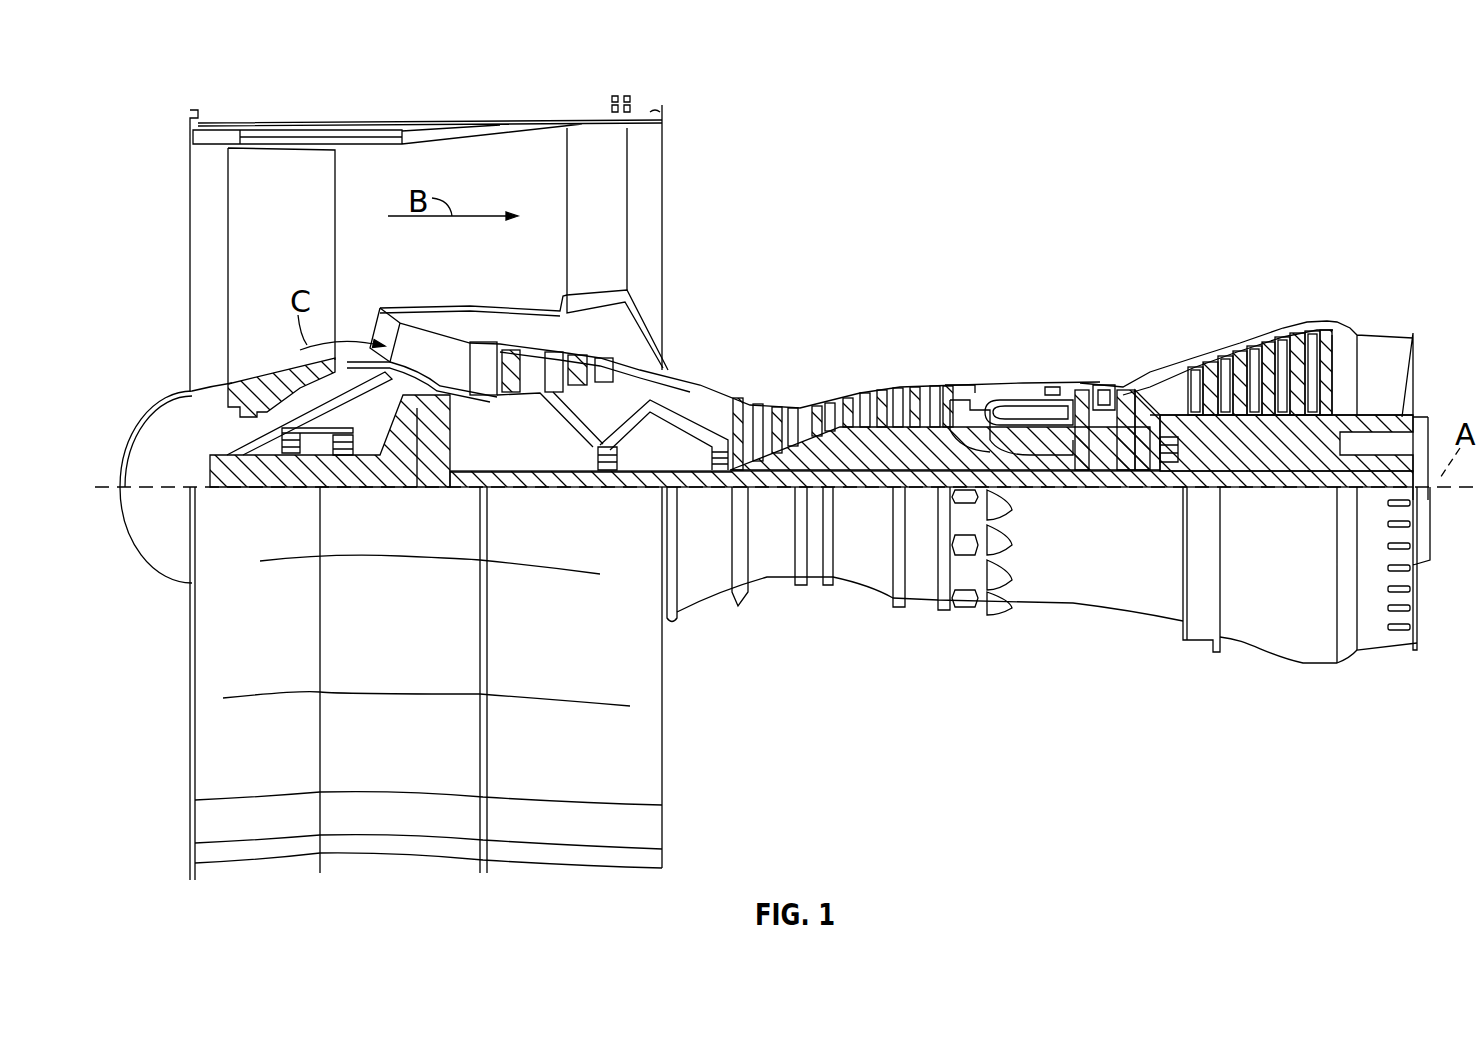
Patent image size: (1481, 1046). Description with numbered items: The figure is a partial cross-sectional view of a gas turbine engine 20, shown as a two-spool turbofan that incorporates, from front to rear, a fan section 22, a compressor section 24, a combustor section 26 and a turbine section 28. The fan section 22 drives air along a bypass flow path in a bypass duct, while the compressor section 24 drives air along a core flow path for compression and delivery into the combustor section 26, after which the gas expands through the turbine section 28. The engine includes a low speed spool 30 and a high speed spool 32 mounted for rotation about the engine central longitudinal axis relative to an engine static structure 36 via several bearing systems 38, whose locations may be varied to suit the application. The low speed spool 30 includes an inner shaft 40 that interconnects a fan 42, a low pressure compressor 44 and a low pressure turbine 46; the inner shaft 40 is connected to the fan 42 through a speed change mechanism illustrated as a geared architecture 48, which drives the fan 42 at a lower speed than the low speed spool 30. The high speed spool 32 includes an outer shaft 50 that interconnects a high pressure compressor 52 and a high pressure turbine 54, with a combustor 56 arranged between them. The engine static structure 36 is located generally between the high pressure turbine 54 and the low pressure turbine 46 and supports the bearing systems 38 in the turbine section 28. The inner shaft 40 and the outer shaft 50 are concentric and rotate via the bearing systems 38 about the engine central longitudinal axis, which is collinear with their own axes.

The gas turbine engine 20 is at (1235, 157).
The fan section 22 is at (302, 105).
The compressor section 24 is at (852, 348).
The combustor section 26 is at (1022, 348).
The turbine section 28 is at (1163, 324).
The low speed spool 30 is at (888, 488).
The high speed spool 32 is at (940, 413).
The engine static structure 36 is at (926, 603).
The bearing systems 38 is at (292, 440).
The inner shaft 40 is at (677, 480).
The fan 42 is at (306, 243).
The low pressure compressor 44 is at (577, 365).
The low pressure turbine 46 is at (1268, 345).
The geared architecture 48 is at (430, 455).
The outer shaft 50 is at (1047, 466).
The high pressure compressor 52 is at (843, 457).
The high pressure turbine 54 is at (1105, 385).
The combustor 56 is at (1027, 403).